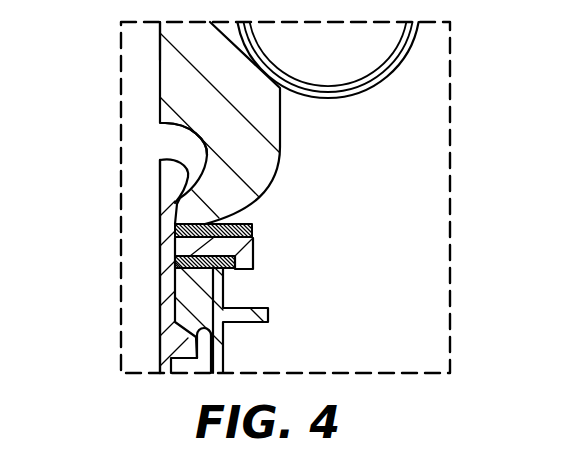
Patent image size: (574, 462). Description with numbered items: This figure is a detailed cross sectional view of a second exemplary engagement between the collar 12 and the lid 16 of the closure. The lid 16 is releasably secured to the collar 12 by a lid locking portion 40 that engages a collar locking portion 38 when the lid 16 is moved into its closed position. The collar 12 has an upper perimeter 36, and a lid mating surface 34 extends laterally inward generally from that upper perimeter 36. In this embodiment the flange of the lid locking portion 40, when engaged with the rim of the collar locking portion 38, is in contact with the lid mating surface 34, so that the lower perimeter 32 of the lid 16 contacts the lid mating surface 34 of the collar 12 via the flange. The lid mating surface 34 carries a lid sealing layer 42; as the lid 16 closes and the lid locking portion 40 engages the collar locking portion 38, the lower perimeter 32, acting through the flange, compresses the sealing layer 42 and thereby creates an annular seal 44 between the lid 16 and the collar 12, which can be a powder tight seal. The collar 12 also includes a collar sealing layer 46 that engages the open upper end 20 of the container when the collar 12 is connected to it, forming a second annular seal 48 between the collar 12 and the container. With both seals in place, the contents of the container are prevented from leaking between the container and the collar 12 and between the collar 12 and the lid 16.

The collar 12 is at (176, 242).
The lid 16 is at (170, 49).
The open upper end 20 is at (213, 294).
The lower perimeter 32 is at (240, 100).
The lid mating surface 34 is at (255, 228).
The upper perimeter 36 is at (165, 160).
The collar locking portion 38 is at (165, 176).
The lid locking portion 40 is at (243, 165).
The lid sealing layer 42 is at (238, 223).
The annular seal 44 is at (200, 223).
The collar sealing layer 46 is at (176, 258).
The annular seal 48 is at (195, 300).